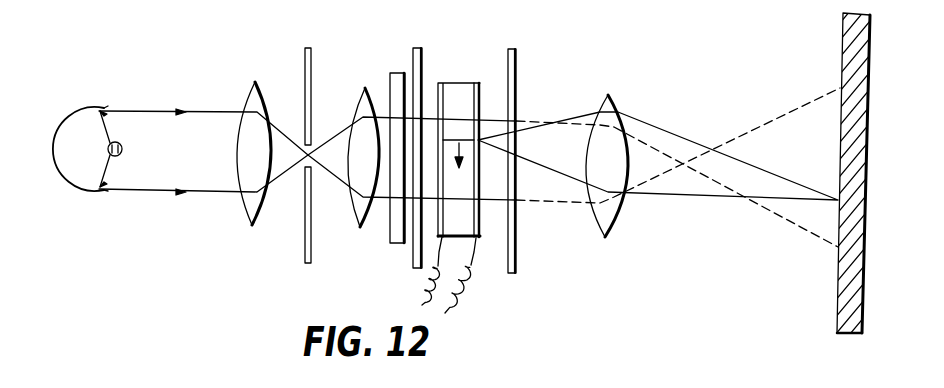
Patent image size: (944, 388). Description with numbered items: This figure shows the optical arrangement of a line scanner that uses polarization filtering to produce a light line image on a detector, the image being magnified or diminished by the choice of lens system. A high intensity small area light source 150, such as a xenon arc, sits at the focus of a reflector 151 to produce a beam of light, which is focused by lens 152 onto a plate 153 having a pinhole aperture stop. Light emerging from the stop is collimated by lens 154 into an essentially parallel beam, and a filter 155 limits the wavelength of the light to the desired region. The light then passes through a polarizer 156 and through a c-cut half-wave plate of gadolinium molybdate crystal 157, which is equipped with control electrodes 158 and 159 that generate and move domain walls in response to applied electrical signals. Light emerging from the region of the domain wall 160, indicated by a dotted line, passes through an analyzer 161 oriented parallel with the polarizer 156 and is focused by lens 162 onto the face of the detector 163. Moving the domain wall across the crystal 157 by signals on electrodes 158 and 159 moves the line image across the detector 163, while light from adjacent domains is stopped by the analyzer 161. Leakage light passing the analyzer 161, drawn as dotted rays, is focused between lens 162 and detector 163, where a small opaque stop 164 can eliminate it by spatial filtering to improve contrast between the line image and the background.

The light source 150 is at (117, 142).
The reflector 151 is at (92, 114).
The lens 152 is at (248, 92).
The plate 153 is at (305, 58).
The lens 154 is at (355, 105).
The filter 155 is at (393, 78).
The polarizer 156 is at (419, 48).
The gadolinium molybdate crystal 157 is at (457, 223).
The control electrode 158 is at (437, 231).
The control electrode 159 is at (478, 232).
The domain wall 160 is at (467, 138).
The analyzer 161 is at (516, 52).
The lens 162 is at (617, 108).
The detector 163 is at (843, 64).
The opaque stop 164 is at (684, 162).